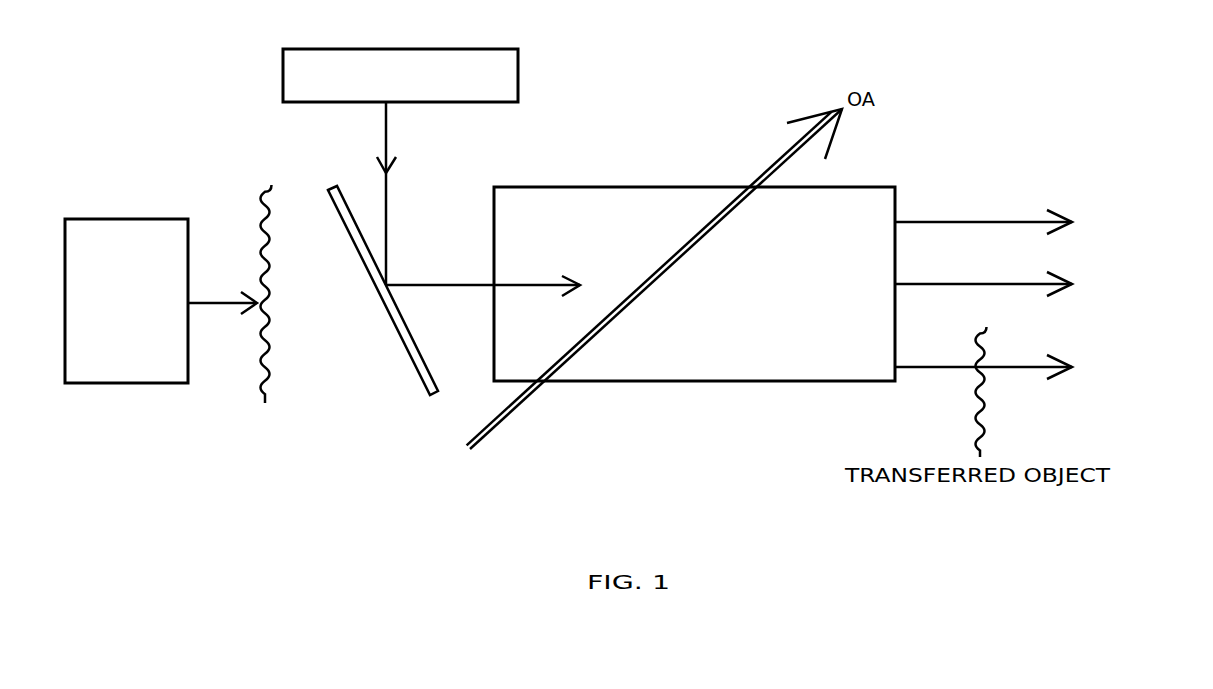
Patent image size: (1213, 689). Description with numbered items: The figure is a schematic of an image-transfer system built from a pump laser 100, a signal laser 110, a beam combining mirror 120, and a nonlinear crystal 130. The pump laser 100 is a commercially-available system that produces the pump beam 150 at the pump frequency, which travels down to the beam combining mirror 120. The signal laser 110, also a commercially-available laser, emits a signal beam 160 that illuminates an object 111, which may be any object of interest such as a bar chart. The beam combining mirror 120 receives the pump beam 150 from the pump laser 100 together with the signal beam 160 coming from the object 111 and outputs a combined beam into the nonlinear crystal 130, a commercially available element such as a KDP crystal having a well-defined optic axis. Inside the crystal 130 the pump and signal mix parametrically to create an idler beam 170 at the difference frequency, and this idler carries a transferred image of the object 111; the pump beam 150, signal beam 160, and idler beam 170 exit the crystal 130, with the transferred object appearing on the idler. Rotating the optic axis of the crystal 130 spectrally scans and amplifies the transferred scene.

The pump laser 100 is at (400, 75).
The signal laser 110 is at (161, 301).
The object 111 is at (257, 321).
The beam combining mirror 120 is at (393, 323).
The nonlinear crystal 130 is at (694, 284).
The pump beam 150 is at (1042, 222).
The signal beam 160 is at (1052, 284).
The idler beam 170 is at (1045, 367).